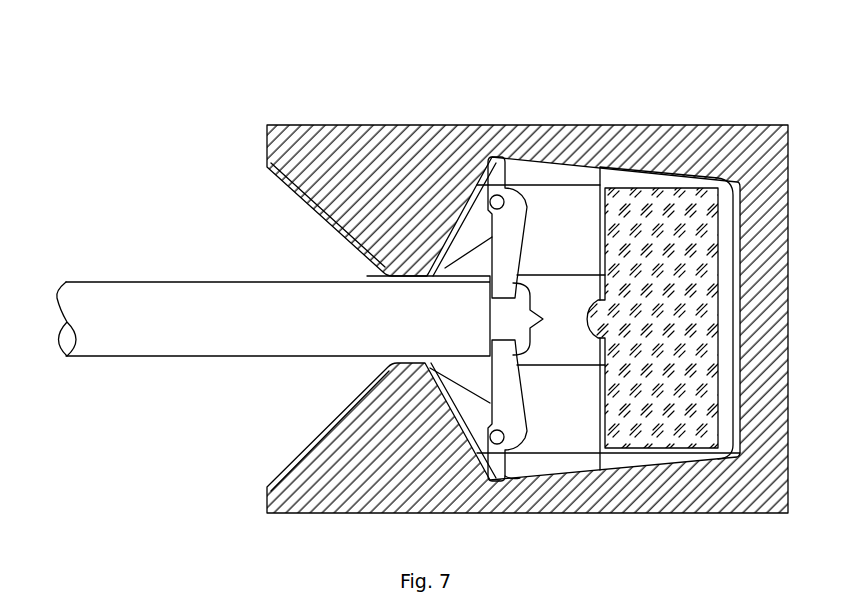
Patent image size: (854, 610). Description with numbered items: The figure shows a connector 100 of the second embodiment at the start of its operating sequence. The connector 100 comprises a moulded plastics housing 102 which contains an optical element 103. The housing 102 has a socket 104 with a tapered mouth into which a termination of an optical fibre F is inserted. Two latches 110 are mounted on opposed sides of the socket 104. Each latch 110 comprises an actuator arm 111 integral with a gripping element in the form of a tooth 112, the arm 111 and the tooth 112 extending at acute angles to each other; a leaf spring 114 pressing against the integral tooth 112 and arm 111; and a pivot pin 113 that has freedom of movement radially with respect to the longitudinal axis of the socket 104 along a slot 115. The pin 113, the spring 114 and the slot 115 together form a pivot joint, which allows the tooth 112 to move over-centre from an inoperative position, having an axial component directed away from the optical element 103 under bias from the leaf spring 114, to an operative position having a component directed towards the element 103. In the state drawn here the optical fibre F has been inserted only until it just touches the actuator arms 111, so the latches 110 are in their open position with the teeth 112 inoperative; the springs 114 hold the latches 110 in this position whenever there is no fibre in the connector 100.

The connector 100 is at (107, 98).
The moulded plastics housing 102 is at (337, 162).
The optical element 103 is at (668, 225).
The socket 104 is at (367, 276).
The latch 110 is at (457, 213).
The actuator arm 111 is at (549, 319).
The tooth 112 is at (447, 263).
The pivot pin 113 is at (520, 195).
The leaf spring 114 is at (577, 457).
The slot 115 is at (528, 482).
The optical fibre F is at (57, 297).